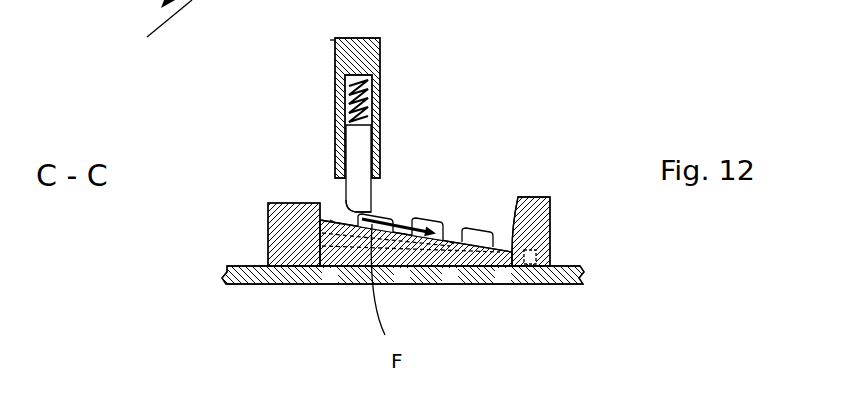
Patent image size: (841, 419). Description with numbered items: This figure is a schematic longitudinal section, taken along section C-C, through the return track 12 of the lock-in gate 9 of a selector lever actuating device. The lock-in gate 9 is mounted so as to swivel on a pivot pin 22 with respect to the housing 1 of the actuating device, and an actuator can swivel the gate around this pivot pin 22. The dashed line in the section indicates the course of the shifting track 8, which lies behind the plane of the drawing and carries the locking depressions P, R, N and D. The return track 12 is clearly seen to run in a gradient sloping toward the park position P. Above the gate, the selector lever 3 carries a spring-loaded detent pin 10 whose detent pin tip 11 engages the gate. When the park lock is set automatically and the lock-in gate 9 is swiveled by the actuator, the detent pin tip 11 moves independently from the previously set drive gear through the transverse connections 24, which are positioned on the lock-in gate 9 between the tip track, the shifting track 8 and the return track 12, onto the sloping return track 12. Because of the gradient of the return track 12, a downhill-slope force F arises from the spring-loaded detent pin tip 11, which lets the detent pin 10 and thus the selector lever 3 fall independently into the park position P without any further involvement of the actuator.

The housing 1 is at (279, 314).
The selector lever 3 is at (357, 56).
The shifting track 8 is at (427, 252).
The lock-in gate 9 is at (297, 213).
The detent pin 10 is at (359, 162).
The detent pin tip 11 is at (357, 207).
The return track 12 is at (474, 228).
The pivot pin 22 is at (531, 260).
The transverse connections 24 is at (330, 215).